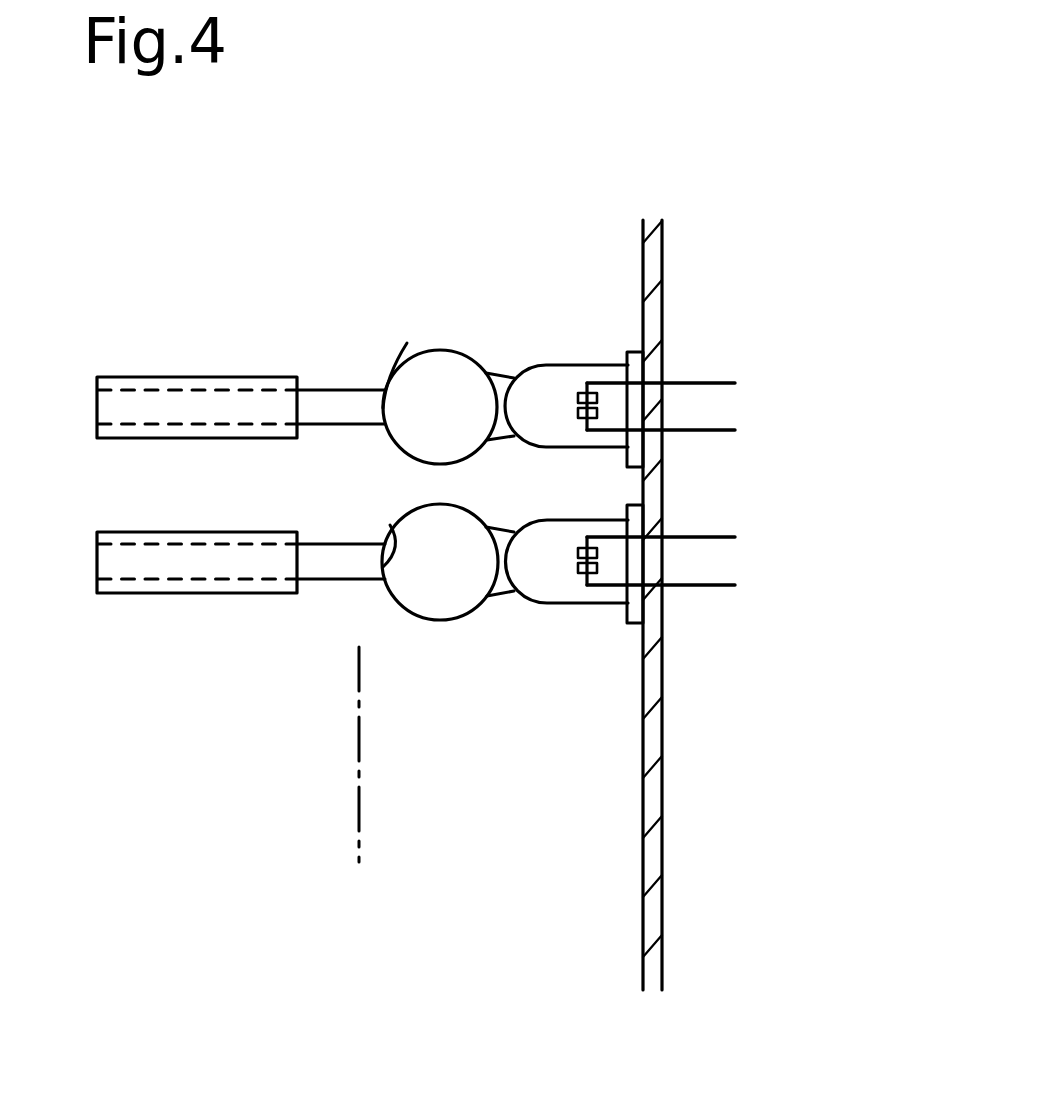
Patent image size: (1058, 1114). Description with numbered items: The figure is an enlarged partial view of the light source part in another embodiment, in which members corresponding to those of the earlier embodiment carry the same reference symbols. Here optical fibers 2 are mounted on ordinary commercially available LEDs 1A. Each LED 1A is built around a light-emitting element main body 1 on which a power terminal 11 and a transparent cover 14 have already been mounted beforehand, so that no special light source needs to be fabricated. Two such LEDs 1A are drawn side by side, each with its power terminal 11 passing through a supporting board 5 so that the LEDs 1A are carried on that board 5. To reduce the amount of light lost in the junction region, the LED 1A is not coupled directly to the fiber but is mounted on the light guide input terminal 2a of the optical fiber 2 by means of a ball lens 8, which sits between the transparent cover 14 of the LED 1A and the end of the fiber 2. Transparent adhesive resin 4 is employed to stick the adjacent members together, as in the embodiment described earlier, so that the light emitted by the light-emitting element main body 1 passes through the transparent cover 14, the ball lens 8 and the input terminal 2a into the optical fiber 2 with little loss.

The light-emitting element main body 1 is at (578, 413).
The LED 1A is at (542, 835).
The optical fiber 2 is at (171, 377).
The light guide input terminal 2a is at (407, 343).
The transparent adhesive resin 4 is at (498, 360).
The printed circuit board 5 is at (662, 767).
The ball lens 8 is at (442, 350).
The power terminal 11 is at (702, 382).
The transparent cover 14 is at (520, 442).